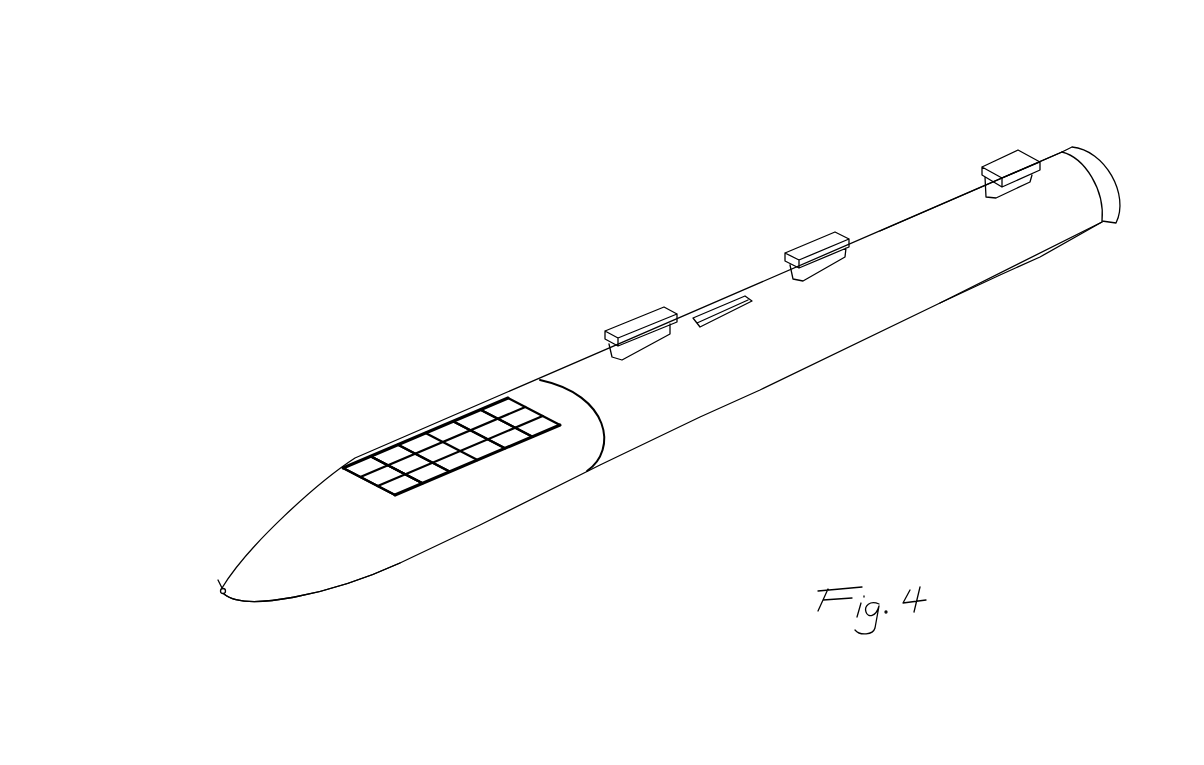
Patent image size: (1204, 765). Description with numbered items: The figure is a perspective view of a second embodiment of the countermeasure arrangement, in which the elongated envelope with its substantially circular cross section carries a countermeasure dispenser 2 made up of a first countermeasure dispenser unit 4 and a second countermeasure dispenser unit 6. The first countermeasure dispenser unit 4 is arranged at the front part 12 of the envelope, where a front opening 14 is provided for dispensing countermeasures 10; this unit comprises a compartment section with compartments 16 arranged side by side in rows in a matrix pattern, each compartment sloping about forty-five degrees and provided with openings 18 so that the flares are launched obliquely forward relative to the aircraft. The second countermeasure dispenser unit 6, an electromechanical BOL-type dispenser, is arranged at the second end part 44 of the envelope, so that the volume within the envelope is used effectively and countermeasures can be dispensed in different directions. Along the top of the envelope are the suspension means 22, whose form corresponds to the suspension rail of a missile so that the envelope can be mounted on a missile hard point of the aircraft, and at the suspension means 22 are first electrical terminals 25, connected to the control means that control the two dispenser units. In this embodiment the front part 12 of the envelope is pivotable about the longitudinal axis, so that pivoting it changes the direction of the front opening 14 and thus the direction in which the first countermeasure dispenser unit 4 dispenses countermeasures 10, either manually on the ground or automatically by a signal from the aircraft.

The countermeasure dispenser 2 is at (1157, 152).
The first countermeasure dispenser unit 4 is at (525, 441).
The second countermeasure dispenser unit 6 is at (1122, 197).
The countermeasures 10 is at (470, 467).
The front part of the envelope 12 is at (232, 448).
The front opening 14 is at (445, 425).
The compartments 16 is at (397, 482).
The openings 18 is at (403, 438).
The suspension means 22 is at (637, 313).
The first electrical terminals 25 is at (708, 302).
The second end part of the envelope 44 is at (1108, 320).